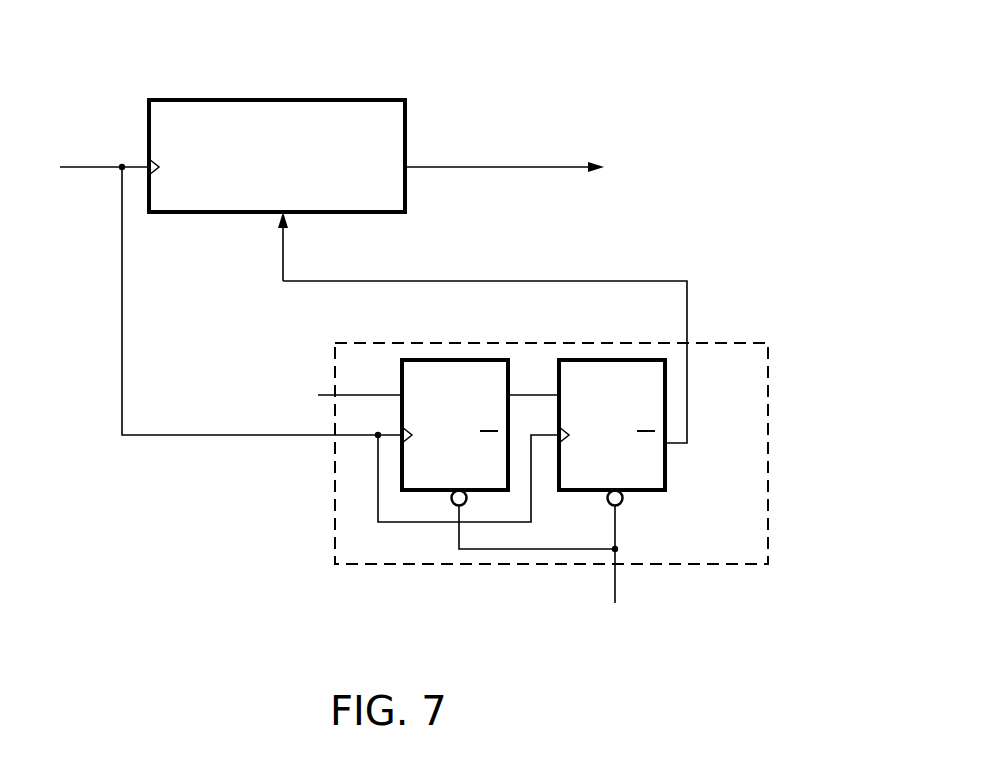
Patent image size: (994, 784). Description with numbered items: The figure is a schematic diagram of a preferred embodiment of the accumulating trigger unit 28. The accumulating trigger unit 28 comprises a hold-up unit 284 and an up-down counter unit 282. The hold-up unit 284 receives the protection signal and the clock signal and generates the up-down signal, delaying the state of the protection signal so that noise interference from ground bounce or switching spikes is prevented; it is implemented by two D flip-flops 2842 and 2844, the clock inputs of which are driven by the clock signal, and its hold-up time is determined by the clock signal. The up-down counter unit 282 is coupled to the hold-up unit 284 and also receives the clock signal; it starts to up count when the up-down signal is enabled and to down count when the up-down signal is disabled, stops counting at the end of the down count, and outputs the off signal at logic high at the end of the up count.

The accumulating trigger unit 28 is at (767, 51).
The up-down counter unit 282 is at (363, 95).
The hold-up unit 284 is at (703, 566).
The D flip-flop 2842 is at (425, 358).
The D flip-flop 2844 is at (665, 472).